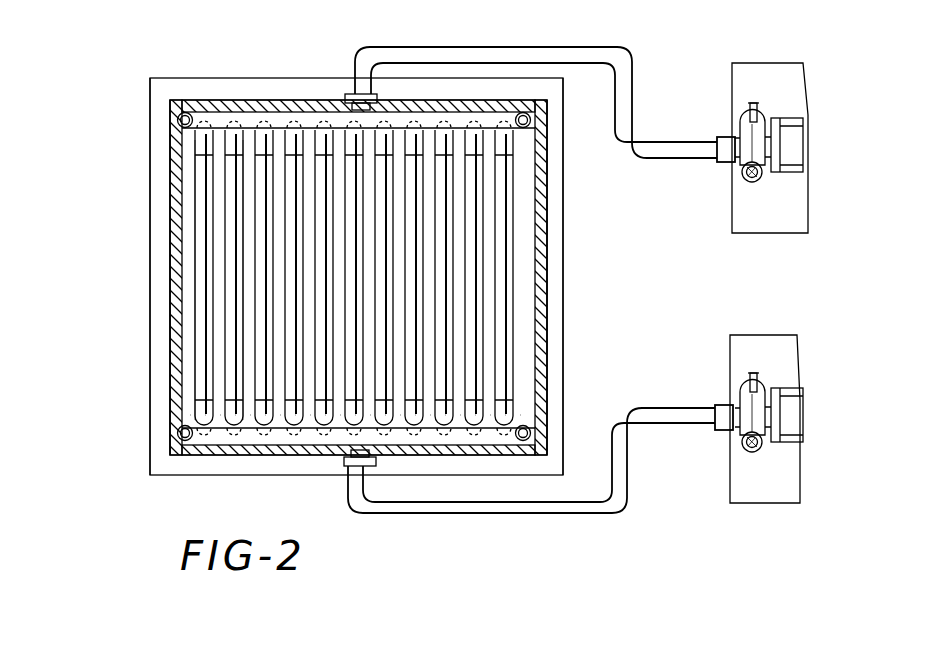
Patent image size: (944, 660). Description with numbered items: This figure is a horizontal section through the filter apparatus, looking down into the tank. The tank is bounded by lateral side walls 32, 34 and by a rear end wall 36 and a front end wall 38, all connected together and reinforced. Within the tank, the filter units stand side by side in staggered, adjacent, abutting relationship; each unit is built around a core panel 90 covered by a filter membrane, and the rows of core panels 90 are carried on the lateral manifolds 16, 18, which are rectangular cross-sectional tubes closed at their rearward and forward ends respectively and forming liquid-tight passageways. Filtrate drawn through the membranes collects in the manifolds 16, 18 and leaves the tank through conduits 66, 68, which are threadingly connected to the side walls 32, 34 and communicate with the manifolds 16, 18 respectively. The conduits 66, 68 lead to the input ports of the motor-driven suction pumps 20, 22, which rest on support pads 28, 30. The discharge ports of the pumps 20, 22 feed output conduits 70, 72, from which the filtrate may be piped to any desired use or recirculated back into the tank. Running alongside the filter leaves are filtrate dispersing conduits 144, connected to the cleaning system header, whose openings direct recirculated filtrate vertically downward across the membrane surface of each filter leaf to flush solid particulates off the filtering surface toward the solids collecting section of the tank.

The manifold 16 is at (510, 400).
The manifold 18 is at (480, 160).
The motor-driven suction pump 20 is at (762, 390).
The motor-driven suction pump 22 is at (765, 116).
The support pad 28 is at (802, 303).
The support pad 30 is at (752, 63).
The lateral side wall 32 is at (326, 96).
The lateral side wall 34 is at (298, 462).
The rear end wall 36 is at (170, 316).
The front end wall 38 is at (563, 312).
The conduit 66 is at (628, 412).
The conduit 68 is at (640, 142).
The output conduit 70 is at (742, 447).
The output conduit 72 is at (745, 180).
The core panel 90 is at (240, 236).
The filtrate dispersing conduit 144 is at (197, 143).